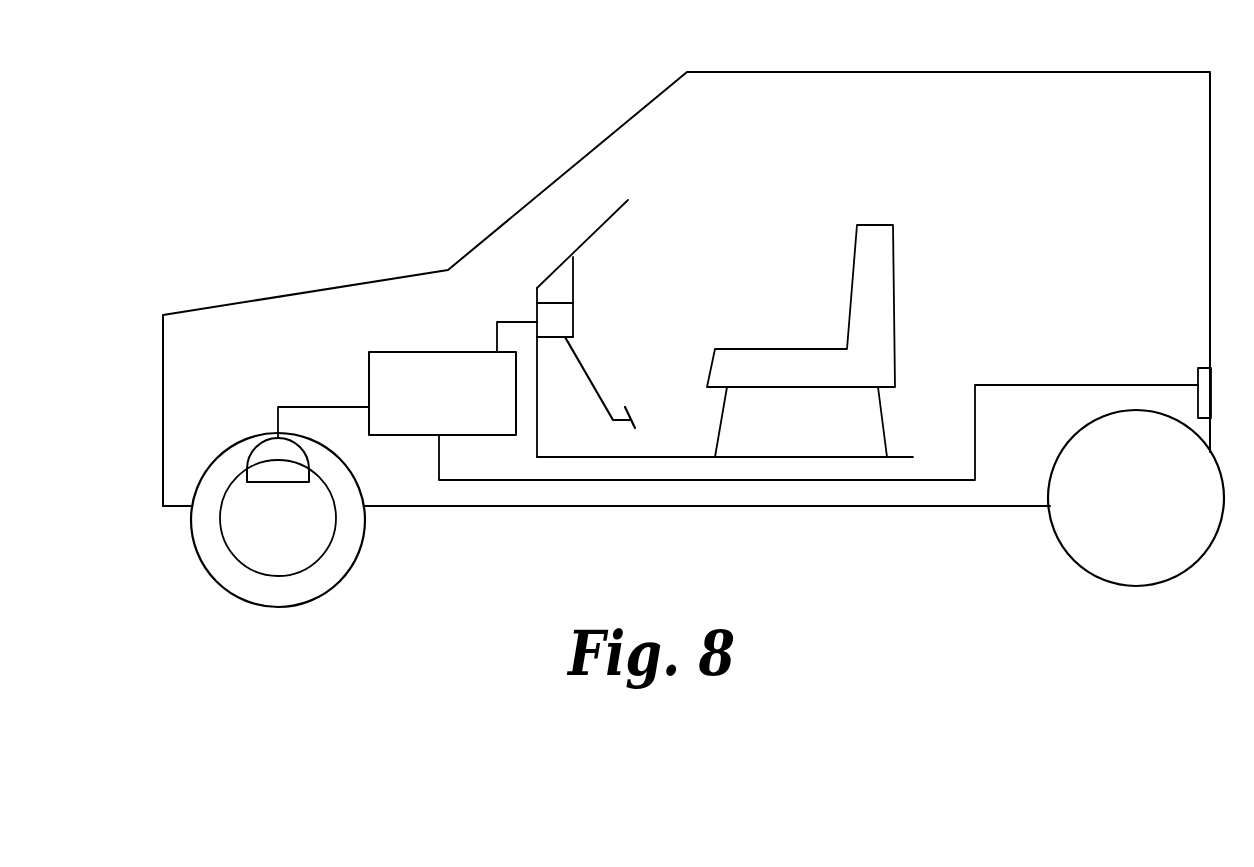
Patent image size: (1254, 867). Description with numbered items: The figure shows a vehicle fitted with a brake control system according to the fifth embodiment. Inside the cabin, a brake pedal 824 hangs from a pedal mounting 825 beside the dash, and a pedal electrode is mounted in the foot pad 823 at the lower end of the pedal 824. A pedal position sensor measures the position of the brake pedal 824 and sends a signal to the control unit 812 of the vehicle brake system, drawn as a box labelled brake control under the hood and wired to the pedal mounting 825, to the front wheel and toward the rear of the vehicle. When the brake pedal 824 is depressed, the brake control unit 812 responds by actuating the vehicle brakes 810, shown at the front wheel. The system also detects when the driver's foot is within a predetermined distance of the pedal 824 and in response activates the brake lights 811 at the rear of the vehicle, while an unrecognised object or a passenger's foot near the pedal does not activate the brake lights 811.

The vehicle brakes 810 is at (258, 446).
The brake lights 811 is at (1205, 385).
The control unit 812 is at (420, 352).
The foot pad 823 is at (630, 420).
The brake pedal 824 is at (597, 383).
The pedal bracket 825 is at (567, 317).